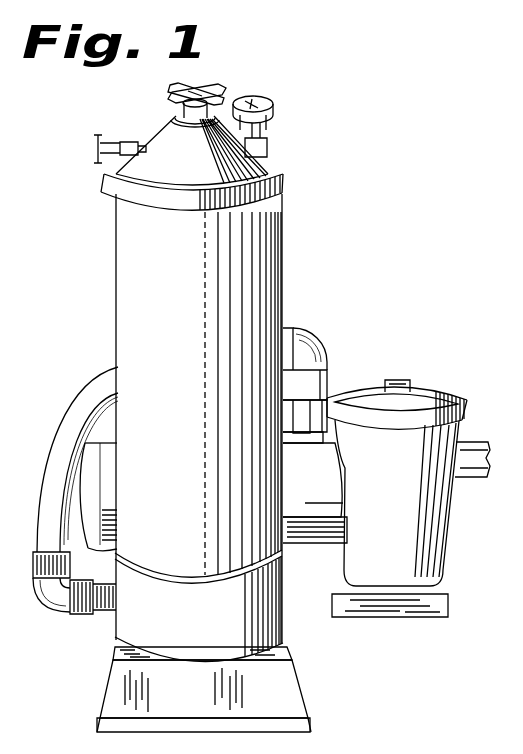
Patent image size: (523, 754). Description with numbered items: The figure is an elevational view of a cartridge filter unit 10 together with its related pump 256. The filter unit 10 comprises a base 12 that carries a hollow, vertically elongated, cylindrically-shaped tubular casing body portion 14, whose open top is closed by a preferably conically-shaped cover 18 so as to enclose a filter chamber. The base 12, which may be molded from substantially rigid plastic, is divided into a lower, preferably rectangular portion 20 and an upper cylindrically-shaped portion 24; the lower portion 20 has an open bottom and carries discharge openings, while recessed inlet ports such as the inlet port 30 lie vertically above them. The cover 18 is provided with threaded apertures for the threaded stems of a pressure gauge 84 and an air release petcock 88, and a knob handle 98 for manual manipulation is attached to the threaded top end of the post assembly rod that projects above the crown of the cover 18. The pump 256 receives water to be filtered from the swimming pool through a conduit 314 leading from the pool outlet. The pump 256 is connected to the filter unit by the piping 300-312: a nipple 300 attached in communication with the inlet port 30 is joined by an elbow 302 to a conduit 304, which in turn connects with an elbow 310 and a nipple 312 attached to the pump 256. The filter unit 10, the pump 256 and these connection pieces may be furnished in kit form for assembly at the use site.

The cartridge filter unit 10 is at (290, 260).
The base 12 is at (287, 647).
The casing body portion 14 is at (117, 296).
The cover 18 is at (287, 182).
The lower rectangular portion 20 is at (283, 693).
The upper cylindrically-shaped portion 24 is at (277, 590).
The inlet port 30 is at (107, 610).
The pressure gauge 84 is at (273, 103).
The air release petcock 88 is at (96, 140).
The knob handle 98 is at (200, 85).
The pump 256 is at (417, 400).
The nipple 300 is at (82, 615).
The pump connection piping 300-312 is at (72, 408).
The elbow 302 is at (50, 587).
The conduit 304 is at (45, 483).
The elbow 310 is at (313, 347).
The nipple 312 is at (310, 415).
The conduit 314 is at (478, 473).